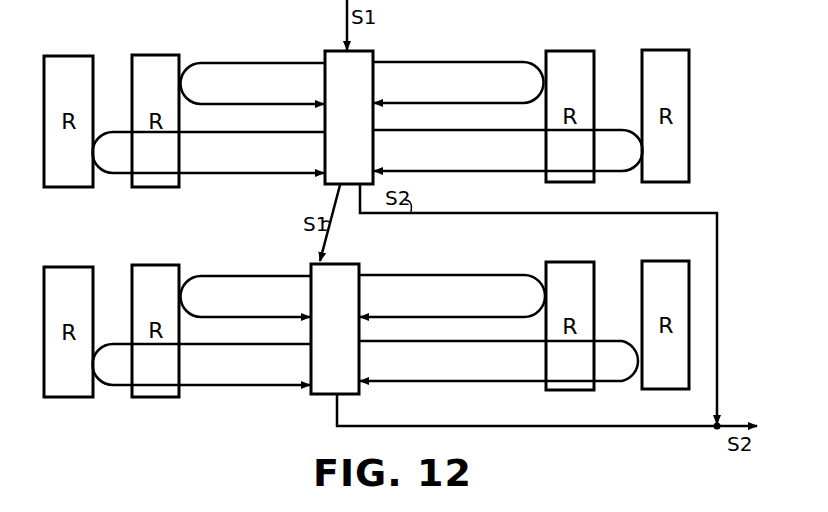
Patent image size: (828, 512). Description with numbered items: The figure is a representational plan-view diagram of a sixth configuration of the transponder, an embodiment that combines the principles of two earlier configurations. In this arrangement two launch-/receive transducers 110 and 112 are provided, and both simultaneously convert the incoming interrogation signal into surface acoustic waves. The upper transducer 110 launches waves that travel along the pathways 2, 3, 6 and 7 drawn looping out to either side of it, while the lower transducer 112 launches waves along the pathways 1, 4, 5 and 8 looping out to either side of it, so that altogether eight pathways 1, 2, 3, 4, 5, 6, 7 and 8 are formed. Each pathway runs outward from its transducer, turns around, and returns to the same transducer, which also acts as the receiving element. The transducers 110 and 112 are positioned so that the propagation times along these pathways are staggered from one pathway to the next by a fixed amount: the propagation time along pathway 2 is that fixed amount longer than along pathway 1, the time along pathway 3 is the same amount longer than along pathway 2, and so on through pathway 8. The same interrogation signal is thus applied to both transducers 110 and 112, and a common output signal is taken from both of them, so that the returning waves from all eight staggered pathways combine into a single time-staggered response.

The pathway 1 is at (266, 279).
The pathway 2 is at (281, 66).
The pathway 3 is at (480, 65).
The pathway 4 is at (471, 278).
The pathway 5 is at (266, 346).
The pathway 6 is at (281, 134).
The pathway 7 is at (488, 133).
The pathway 8 is at (475, 343).
The launch-/receive transducer 110 is at (330, 60).
The launch-/receive transducer 112 is at (317, 396).